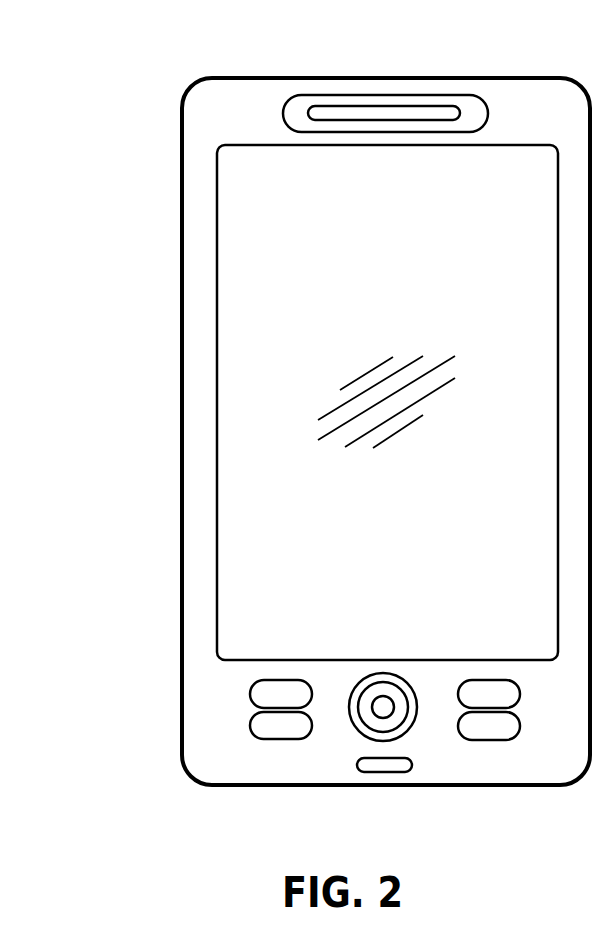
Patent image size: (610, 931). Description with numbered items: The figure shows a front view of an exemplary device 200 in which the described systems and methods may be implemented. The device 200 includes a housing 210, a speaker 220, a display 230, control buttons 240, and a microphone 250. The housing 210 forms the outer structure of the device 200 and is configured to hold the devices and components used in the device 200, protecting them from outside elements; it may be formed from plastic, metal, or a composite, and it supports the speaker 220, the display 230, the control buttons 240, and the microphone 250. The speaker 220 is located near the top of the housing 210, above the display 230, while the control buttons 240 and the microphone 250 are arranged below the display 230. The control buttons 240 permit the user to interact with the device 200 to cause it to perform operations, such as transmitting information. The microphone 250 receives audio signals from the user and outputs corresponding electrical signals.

The device 200 is at (192, 41).
The housing 210 is at (182, 215).
The speaker 220 is at (283, 113).
The display 230 is at (237, 267).
The control buttons 240 is at (230, 691).
The microphone 250 is at (390, 771).